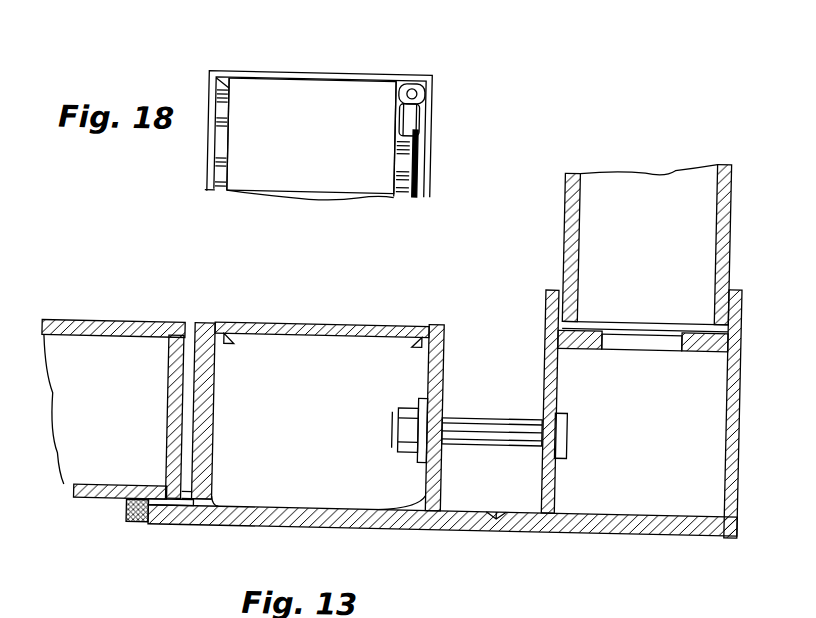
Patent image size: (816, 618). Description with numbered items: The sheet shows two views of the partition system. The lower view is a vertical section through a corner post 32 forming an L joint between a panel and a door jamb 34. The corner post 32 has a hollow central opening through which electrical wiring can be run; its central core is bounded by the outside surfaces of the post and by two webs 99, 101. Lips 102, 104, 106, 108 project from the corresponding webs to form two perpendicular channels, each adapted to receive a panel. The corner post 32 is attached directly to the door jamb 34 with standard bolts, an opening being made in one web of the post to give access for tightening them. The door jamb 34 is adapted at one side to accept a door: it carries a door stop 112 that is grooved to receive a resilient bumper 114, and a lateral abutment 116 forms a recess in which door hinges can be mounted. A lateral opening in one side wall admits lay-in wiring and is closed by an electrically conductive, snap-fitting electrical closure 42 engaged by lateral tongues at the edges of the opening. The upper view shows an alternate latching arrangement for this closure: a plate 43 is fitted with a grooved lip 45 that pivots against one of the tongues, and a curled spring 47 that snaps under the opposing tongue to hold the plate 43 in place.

In FIG. 18, the plate 43 is at (311, 75).
In FIG. 18, the grooved lip 45 is at (219, 150).
In FIG. 18, the curled spring 47 is at (422, 128).
In FIG. 13, the corner post 32 is at (671, 533).
In FIG. 13, the door jamb 34 is at (372, 532).
In FIG. 13, the electrical closure 42 is at (306, 326).
In FIG. 13, the web 99 is at (557, 476).
In FIG. 13, the web 101 is at (587, 348).
In FIG. 13, the lip 102 is at (572, 312).
In FIG. 13, the lip 104 is at (714, 311).
In FIG. 13, the lip 106 is at (512, 336).
In FIG. 13, the lip 108 is at (512, 502).
In FIG. 13, the door stop 112 is at (158, 520).
In FIG. 13, the resilient bumper 114 is at (133, 526).
In FIG. 13, the lateral abutment 116 is at (199, 326).